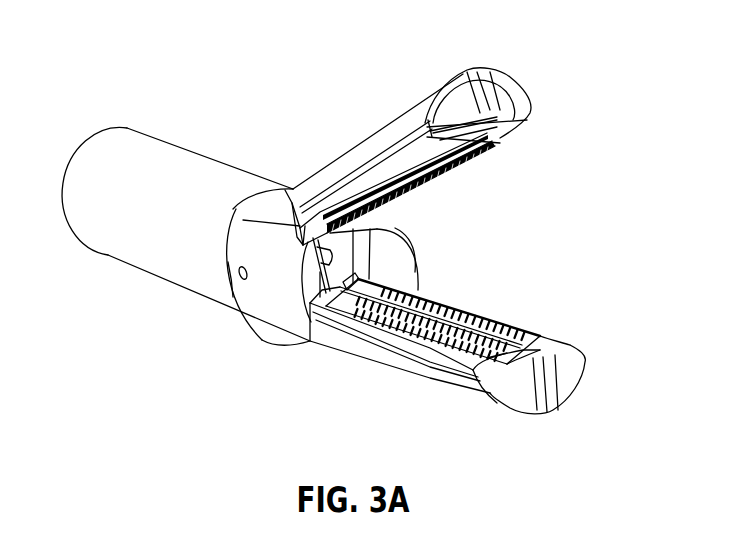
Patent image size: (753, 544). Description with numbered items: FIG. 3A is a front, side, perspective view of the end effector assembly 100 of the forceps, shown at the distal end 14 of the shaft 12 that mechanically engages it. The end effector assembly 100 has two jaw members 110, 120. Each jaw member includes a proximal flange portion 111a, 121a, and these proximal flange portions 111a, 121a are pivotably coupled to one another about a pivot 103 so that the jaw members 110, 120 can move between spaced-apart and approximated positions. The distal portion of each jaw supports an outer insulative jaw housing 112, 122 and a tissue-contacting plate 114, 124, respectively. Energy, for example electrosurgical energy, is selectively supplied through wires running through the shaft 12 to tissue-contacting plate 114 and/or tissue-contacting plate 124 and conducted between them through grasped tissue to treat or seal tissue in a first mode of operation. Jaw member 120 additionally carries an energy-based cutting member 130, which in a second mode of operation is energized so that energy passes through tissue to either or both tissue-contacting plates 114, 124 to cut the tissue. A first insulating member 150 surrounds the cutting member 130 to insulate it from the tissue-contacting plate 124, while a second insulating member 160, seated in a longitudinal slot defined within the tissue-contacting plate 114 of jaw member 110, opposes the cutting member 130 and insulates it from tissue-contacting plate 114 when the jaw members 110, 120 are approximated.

The end effector assembly 100 is at (316, 54).
The shaft 12 is at (135, 148).
The distal end 14 is at (255, 181).
The pivot 103 is at (240, 280).
The proximal flange portion 111a is at (230, 262).
The proximal flange portion 121a is at (280, 287).
The jaw member 110 is at (444, 130).
The outer insulative jaw housing 112 is at (506, 88).
The tissue-contacting plate 114 is at (494, 143).
The second insulating member 160 is at (411, 191).
The jaw member 120 is at (479, 346).
The outer insulative jaw housing 122 is at (570, 377).
The tissue-contacting plate 124 is at (433, 284).
The energy-based cutting member 130 is at (451, 300).
The first insulating member 150 is at (536, 340).